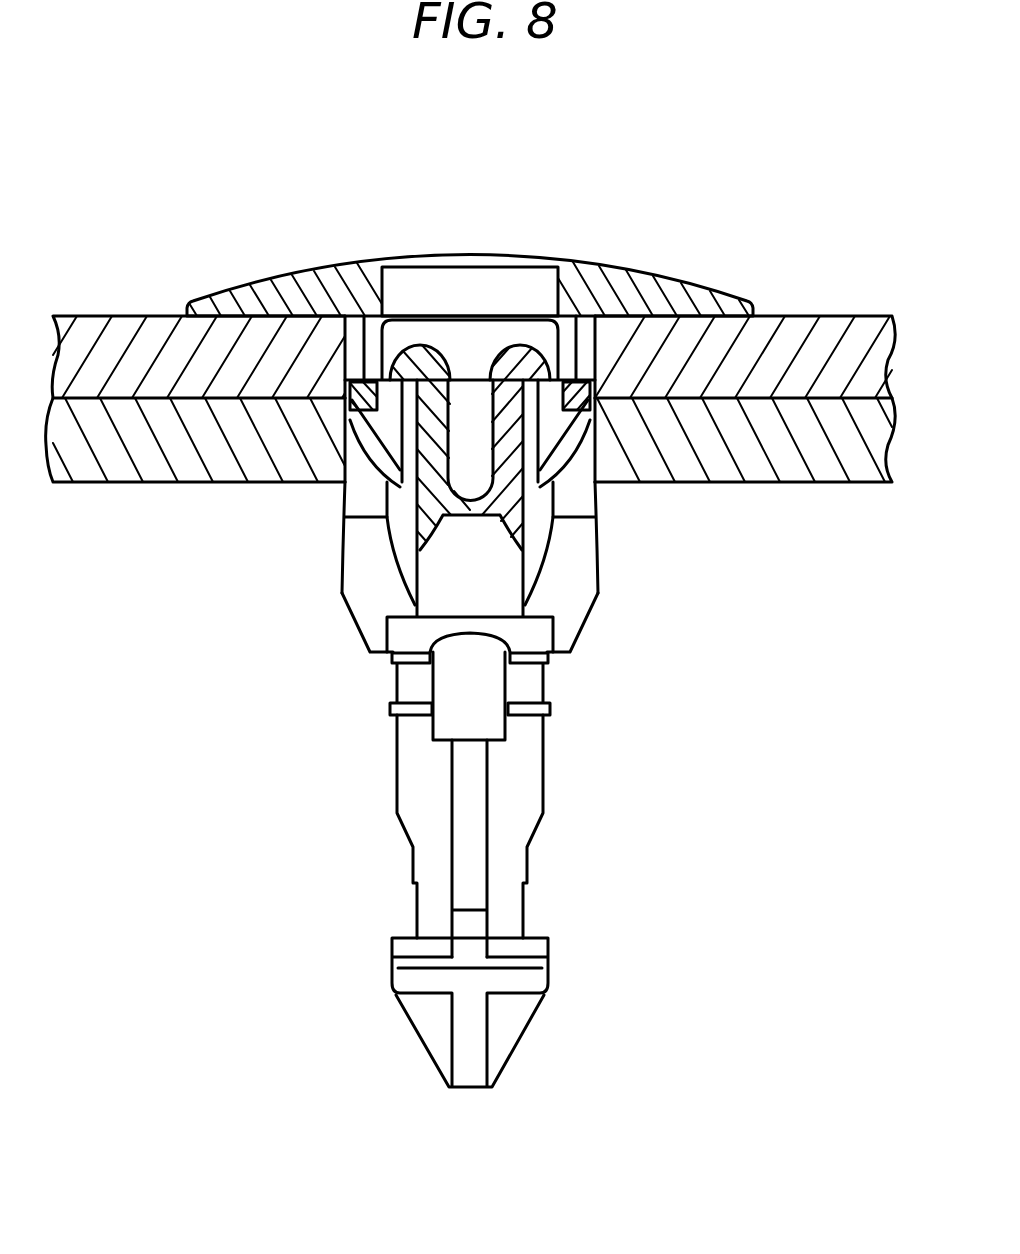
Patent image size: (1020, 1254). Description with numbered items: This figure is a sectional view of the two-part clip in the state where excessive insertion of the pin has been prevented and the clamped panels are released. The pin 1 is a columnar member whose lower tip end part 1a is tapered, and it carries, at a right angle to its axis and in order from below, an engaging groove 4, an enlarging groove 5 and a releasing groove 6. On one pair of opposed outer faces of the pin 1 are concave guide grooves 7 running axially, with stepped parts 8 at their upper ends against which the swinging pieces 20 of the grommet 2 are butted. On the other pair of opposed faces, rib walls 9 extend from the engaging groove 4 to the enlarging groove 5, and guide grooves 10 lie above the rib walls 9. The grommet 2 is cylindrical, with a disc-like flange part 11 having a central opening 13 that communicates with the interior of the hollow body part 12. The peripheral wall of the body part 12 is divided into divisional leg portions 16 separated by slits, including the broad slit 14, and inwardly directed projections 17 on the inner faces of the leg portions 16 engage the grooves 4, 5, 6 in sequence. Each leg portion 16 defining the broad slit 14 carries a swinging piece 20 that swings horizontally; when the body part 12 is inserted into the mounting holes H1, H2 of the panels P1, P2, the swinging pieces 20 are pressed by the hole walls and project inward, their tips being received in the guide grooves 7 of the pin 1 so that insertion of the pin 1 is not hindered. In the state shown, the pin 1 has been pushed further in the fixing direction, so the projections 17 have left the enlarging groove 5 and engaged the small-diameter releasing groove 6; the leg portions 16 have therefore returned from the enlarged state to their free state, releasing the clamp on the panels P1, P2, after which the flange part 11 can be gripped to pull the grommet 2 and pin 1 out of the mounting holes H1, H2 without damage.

The pin 1 is at (463, 921).
The tip end part 1a is at (527, 983).
The grommet 2 is at (350, 214).
The engaging groove 4 is at (432, 905).
The enlarging groove 5 is at (400, 680).
The releasing groove 6 is at (500, 550).
The guide grooves 7 is at (345, 405).
The stepped parts 8 is at (345, 385).
The rib walls 9 is at (475, 777).
The guide grooves 10 is at (500, 677).
The flange part 11 is at (604, 278).
The body part 12 is at (723, 560).
The opening 13 is at (489, 270).
The broad slit 14 is at (380, 588).
The divisional leg portions 16 is at (345, 568).
The inwardly directed projections 17 is at (407, 606).
The swinging pieces 20 is at (352, 428).
The mounting hole H1 is at (345, 350).
The mounting hole H2 is at (340, 460).
The panel P1 is at (850, 316).
The panel P2 is at (850, 478).